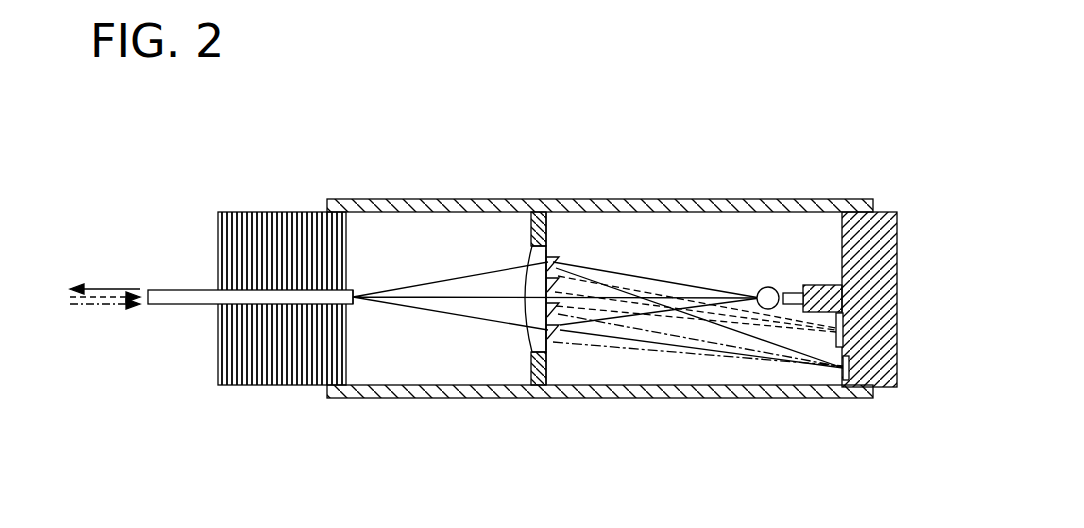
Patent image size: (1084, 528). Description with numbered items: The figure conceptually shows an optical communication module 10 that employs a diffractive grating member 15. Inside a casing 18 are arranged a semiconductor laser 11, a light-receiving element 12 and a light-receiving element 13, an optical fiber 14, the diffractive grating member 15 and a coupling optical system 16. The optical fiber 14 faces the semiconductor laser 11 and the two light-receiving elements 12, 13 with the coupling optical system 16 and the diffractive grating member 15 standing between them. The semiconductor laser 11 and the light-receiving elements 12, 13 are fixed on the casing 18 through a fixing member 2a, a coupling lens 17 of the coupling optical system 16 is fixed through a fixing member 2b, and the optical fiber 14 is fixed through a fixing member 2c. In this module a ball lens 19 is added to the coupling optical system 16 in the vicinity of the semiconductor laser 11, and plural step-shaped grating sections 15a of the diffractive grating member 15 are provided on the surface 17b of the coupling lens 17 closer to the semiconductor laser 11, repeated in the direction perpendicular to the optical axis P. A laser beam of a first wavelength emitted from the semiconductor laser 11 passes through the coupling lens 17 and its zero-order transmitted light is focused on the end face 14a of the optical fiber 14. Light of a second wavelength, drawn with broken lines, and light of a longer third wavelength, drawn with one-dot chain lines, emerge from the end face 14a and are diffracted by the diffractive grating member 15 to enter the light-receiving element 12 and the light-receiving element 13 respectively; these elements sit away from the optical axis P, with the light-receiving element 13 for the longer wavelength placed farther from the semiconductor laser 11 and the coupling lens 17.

The optical communication module 10 is at (600, 303).
The fixing member 2a is at (890, 315).
The fixing member 2b is at (535, 378).
The fixing member 2c is at (253, 372).
The semiconductor laser 11 is at (792, 286).
The light-receiving element 12 is at (836, 338).
The light-receiving element 13 is at (843, 378).
The optical fiber 14 is at (187, 305).
The end face 14a is at (357, 306).
The diffractive grating member 15 is at (599, 346).
The step-shaped grating sections 15a is at (560, 339).
The coupling optical system 16 is at (552, 244).
The coupling lens 17 is at (533, 342).
The surface 17b is at (548, 340).
The casing 18 is at (483, 200).
The ball lens 19 is at (768, 287).
The optical axis P is at (457, 300).